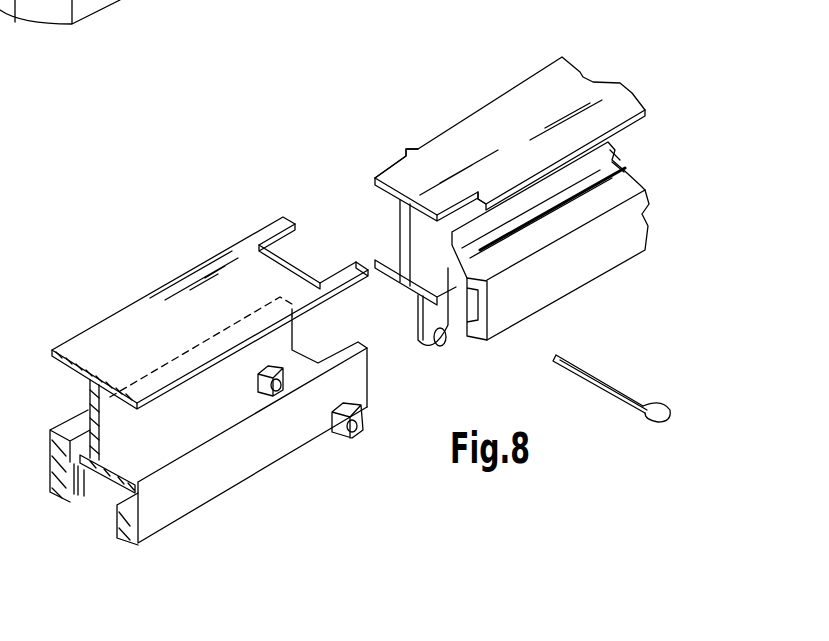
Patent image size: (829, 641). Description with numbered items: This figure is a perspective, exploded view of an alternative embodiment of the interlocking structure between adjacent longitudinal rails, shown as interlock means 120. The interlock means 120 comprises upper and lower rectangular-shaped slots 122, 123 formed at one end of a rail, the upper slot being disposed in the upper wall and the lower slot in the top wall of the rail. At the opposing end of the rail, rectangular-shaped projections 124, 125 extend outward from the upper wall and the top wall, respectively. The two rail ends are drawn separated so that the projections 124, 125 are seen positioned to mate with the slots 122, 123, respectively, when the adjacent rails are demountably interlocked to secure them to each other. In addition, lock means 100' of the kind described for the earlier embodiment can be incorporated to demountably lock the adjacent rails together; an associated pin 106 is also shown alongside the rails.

The lock means 100' is at (264, 445).
The cotter pin 106 is at (603, 375).
The interlock means 120 is at (337, 160).
The upper rectangular-shaped slot 122 is at (318, 246).
The lower rectangular-shaped slot 123 is at (335, 333).
The rectangular-shaped projection 124 is at (392, 188).
The rectangular-shaped projection 125 is at (440, 286).